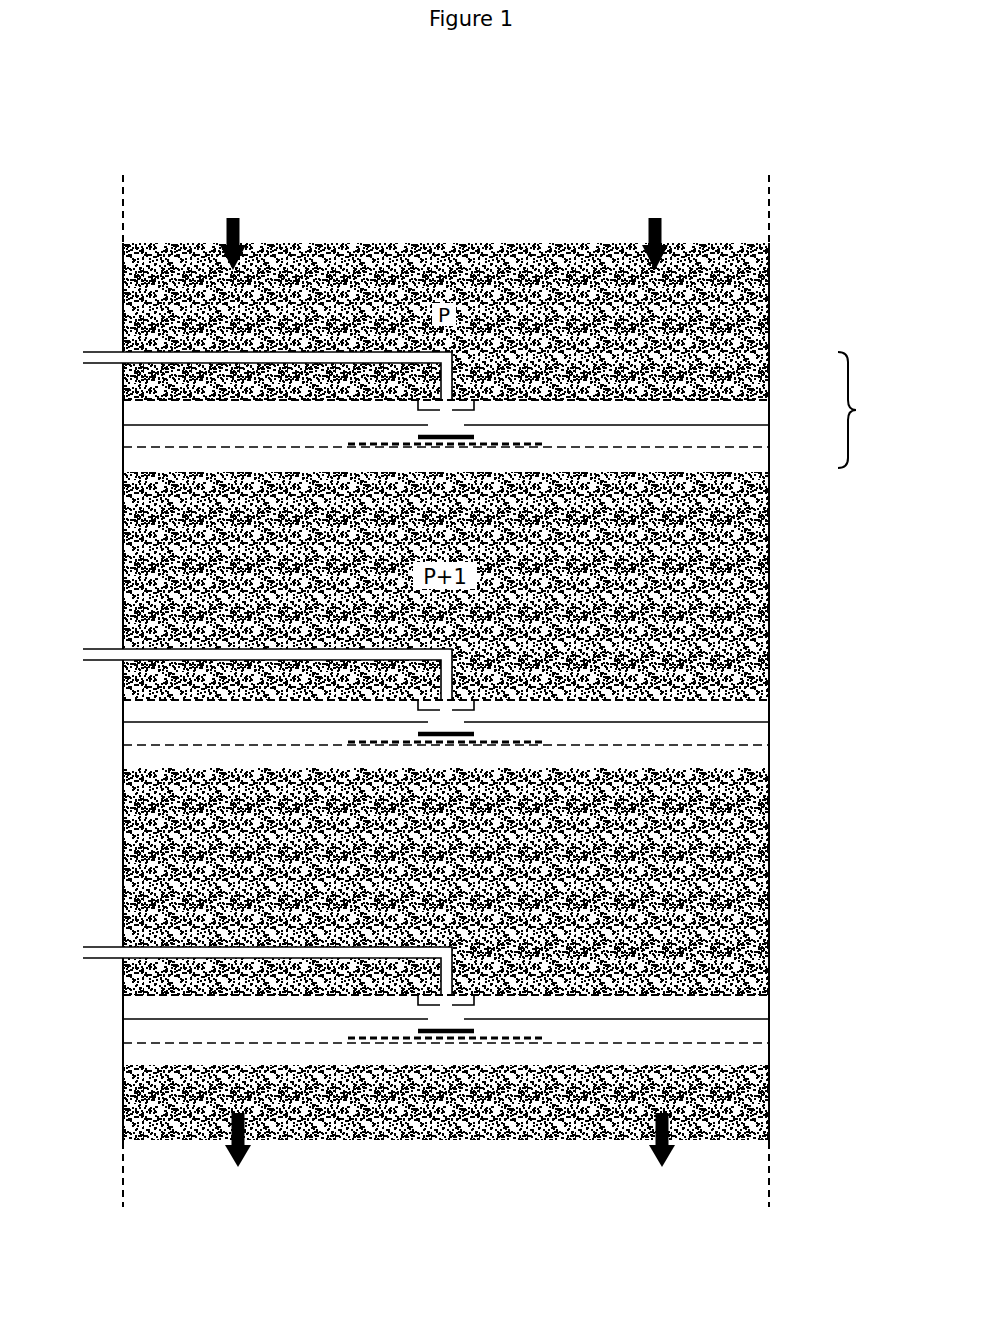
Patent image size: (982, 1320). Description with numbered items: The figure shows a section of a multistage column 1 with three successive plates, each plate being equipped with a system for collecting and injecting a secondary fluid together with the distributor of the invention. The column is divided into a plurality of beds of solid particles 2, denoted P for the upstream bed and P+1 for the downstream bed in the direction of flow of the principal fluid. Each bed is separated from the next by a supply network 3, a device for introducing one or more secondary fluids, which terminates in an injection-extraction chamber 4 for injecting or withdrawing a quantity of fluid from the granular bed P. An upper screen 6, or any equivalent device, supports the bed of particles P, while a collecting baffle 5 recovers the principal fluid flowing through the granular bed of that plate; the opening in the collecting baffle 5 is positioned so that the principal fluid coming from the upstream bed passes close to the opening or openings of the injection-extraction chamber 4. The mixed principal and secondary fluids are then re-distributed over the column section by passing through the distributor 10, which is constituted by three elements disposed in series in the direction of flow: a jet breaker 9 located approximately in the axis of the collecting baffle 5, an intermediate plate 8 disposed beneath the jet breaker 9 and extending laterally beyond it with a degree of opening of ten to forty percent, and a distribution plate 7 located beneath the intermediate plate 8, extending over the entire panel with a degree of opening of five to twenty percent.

The multistage column 1 is at (769, 640).
The beds of solid particles 2 is at (666, 531).
The supply network 3 is at (162, 352).
The injection-extraction chamber 4 is at (468, 996).
The collecting baffle 5 is at (162, 426).
The upper screen 6 is at (162, 401).
The distribution plate 7 is at (578, 448).
The intermediate plate 8 is at (517, 445).
The jet breaker 9 is at (458, 433).
The distributor 10 is at (866, 410).